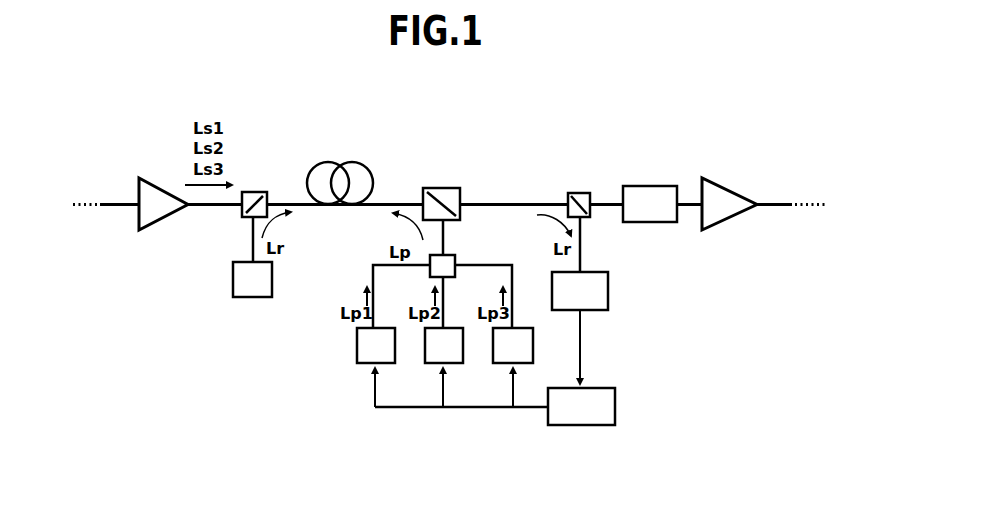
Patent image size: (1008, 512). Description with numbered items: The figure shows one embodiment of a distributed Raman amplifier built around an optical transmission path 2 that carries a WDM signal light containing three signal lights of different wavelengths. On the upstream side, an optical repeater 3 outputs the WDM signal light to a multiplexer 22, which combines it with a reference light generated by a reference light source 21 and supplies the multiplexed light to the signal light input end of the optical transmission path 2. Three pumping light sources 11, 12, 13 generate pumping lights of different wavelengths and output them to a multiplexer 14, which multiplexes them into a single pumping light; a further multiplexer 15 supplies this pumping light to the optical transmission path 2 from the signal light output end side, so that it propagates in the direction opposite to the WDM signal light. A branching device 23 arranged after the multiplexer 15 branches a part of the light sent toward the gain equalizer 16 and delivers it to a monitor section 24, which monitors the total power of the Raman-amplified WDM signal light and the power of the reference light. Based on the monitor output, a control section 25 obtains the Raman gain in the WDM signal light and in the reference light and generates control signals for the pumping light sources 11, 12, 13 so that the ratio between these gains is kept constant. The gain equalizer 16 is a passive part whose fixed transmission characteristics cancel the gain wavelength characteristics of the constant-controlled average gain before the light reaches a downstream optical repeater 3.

The optical transmission path 2 is at (335, 163).
The optical repeater 3 is at (152, 186).
The pumping light source 11 is at (366, 365).
The pumping light source 12 is at (434, 365).
The pumping light source 13 is at (502, 365).
The multiplexer 14 is at (455, 262).
The multiplexer 15 is at (437, 188).
The gain equalizer 16 is at (640, 186).
The reference light source 21 is at (250, 298).
The multiplexer 22 is at (258, 192).
The branching device 23 is at (578, 193).
The monitor section 24 is at (609, 291).
The control section 25 is at (617, 403).